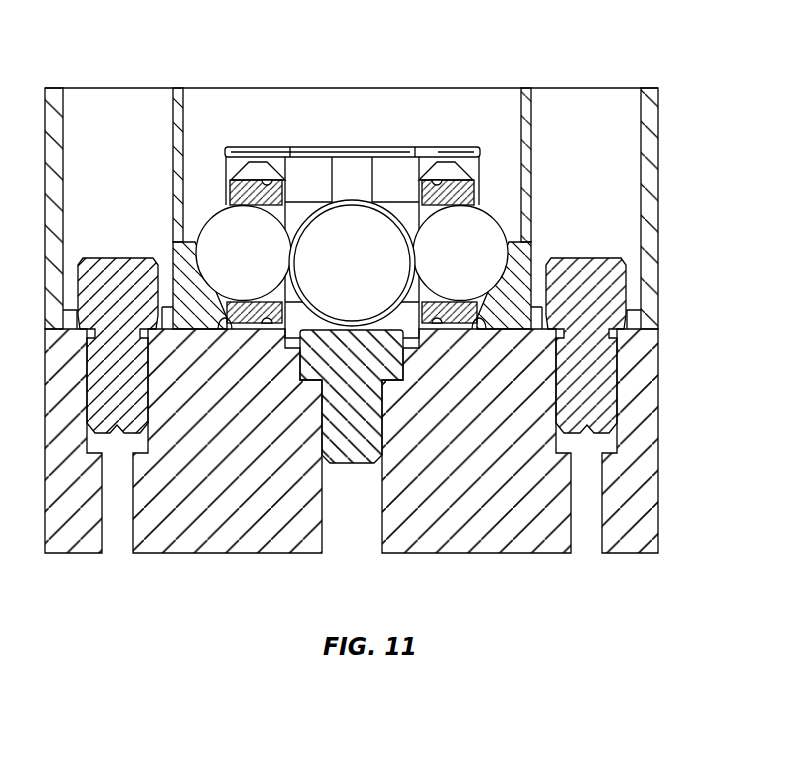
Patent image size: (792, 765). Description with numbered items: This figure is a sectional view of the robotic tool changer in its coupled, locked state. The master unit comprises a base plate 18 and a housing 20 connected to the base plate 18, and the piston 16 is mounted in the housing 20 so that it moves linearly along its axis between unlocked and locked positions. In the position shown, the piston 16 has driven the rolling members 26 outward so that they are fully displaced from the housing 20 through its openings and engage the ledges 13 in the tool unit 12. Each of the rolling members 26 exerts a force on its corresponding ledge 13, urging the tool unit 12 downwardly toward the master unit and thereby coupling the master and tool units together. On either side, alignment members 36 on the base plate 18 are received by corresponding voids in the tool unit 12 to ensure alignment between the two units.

The tool unit 12 is at (660, 119).
The ledge 13 is at (213, 295).
The piston 16 is at (342, 273).
The base plate 18 is at (660, 476).
The housing 20 is at (395, 178).
The rolling members 26 is at (230, 262).
The alignment member 36 is at (600, 262).